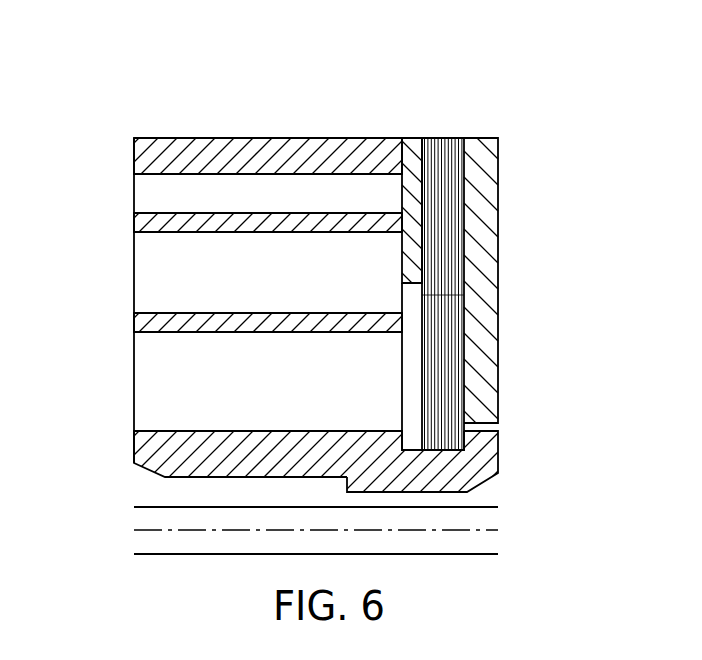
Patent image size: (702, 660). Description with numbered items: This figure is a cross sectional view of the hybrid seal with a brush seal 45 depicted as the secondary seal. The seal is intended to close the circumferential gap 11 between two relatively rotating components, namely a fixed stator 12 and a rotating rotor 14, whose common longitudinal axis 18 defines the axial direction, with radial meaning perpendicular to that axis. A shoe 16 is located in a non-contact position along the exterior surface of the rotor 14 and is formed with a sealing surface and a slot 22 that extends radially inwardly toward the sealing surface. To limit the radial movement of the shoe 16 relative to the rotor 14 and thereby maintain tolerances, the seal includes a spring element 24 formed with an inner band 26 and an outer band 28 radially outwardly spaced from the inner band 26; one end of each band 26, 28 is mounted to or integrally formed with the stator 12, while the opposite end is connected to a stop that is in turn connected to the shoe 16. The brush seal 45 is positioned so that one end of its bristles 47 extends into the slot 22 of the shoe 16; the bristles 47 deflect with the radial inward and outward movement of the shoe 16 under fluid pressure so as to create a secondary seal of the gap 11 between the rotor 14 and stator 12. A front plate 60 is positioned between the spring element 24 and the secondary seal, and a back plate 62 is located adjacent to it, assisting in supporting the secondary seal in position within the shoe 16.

The spring element 24 is at (110, 102).
The stator 12 is at (355, 138).
The outer band 28 is at (137, 218).
The inner band 26 is at (137, 324).
The shoe 16 is at (135, 433).
The slot 22 is at (408, 443).
The front plate 60 is at (412, 138).
The bristles 47 is at (443, 393).
The brush seal 45 is at (457, 130).
The back plate 62 is at (498, 260).
The circumferential gap 11 is at (468, 497).
The longitudinal axis 18 is at (138, 531).
The rotor 14 is at (463, 554).